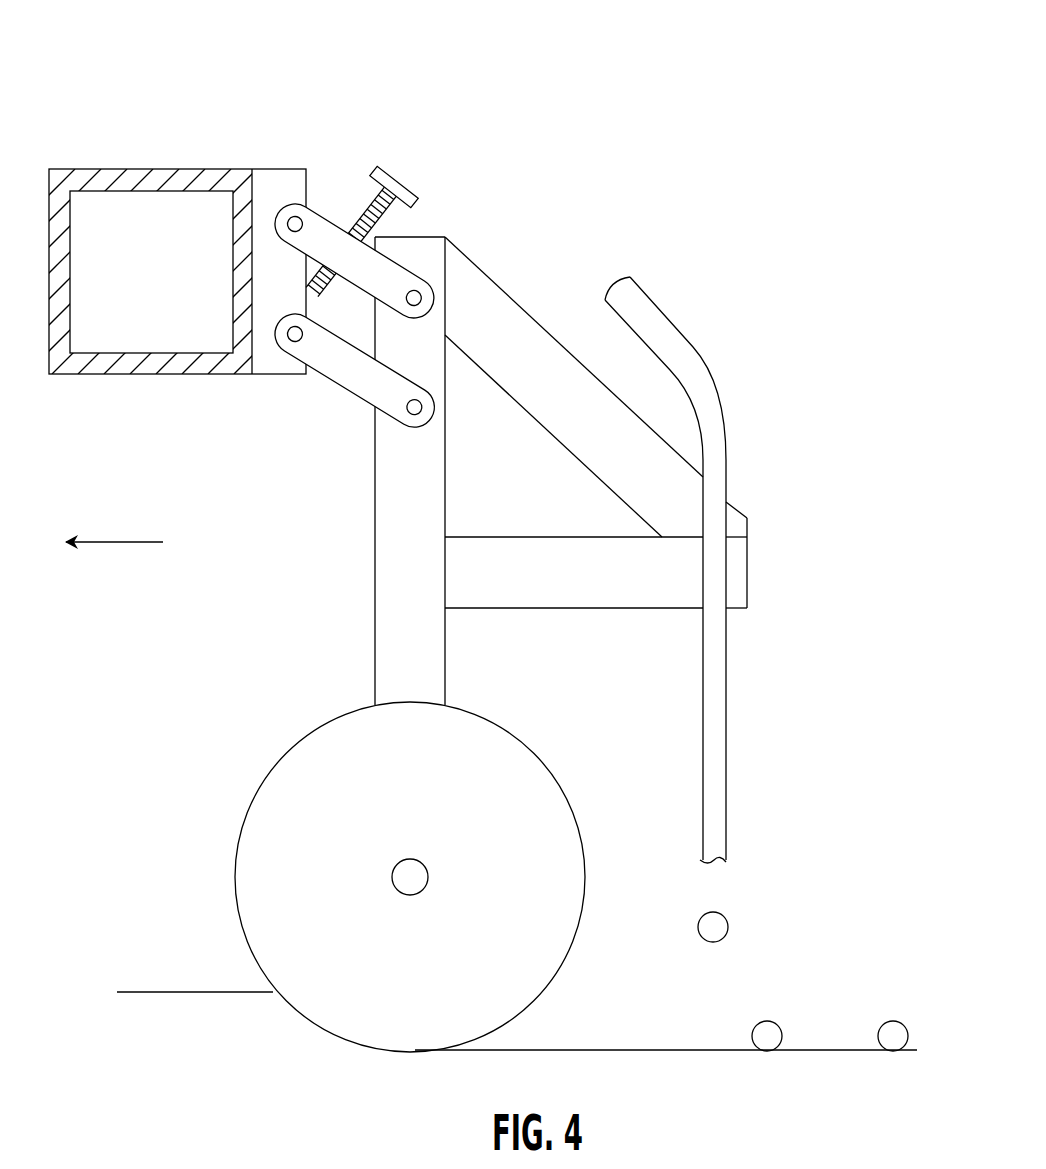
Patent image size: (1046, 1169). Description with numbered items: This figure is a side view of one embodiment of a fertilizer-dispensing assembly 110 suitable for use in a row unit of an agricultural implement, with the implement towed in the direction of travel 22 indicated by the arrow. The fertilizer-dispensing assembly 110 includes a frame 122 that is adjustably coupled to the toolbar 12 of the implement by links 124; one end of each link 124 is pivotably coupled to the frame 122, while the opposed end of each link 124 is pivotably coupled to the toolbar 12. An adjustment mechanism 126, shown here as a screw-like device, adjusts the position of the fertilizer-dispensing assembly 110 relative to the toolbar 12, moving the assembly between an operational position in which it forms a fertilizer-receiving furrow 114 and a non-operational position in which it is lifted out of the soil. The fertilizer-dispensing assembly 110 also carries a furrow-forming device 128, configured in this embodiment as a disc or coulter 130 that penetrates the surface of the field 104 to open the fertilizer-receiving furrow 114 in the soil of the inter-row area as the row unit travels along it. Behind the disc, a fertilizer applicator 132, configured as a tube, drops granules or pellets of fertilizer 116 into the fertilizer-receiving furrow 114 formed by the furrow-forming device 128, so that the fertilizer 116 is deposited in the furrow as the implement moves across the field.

The fertilizer-dispensing assembly 110 is at (141, 70).
The toolbar 12 is at (182, 168).
The direction of travel 22 is at (110, 542).
The surface of the field 104 is at (187, 992).
The fertilizer-receiving furrow 114 is at (578, 1047).
The fertilizer 116 is at (728, 927).
The frame 122 is at (380, 595).
The links 124 is at (330, 210).
The adjustment mechanism 126 is at (398, 182).
The furrow-forming device 128 is at (376, 863).
The disc or coulter 130 is at (273, 765).
The fertilizer applicator 132 is at (727, 778).